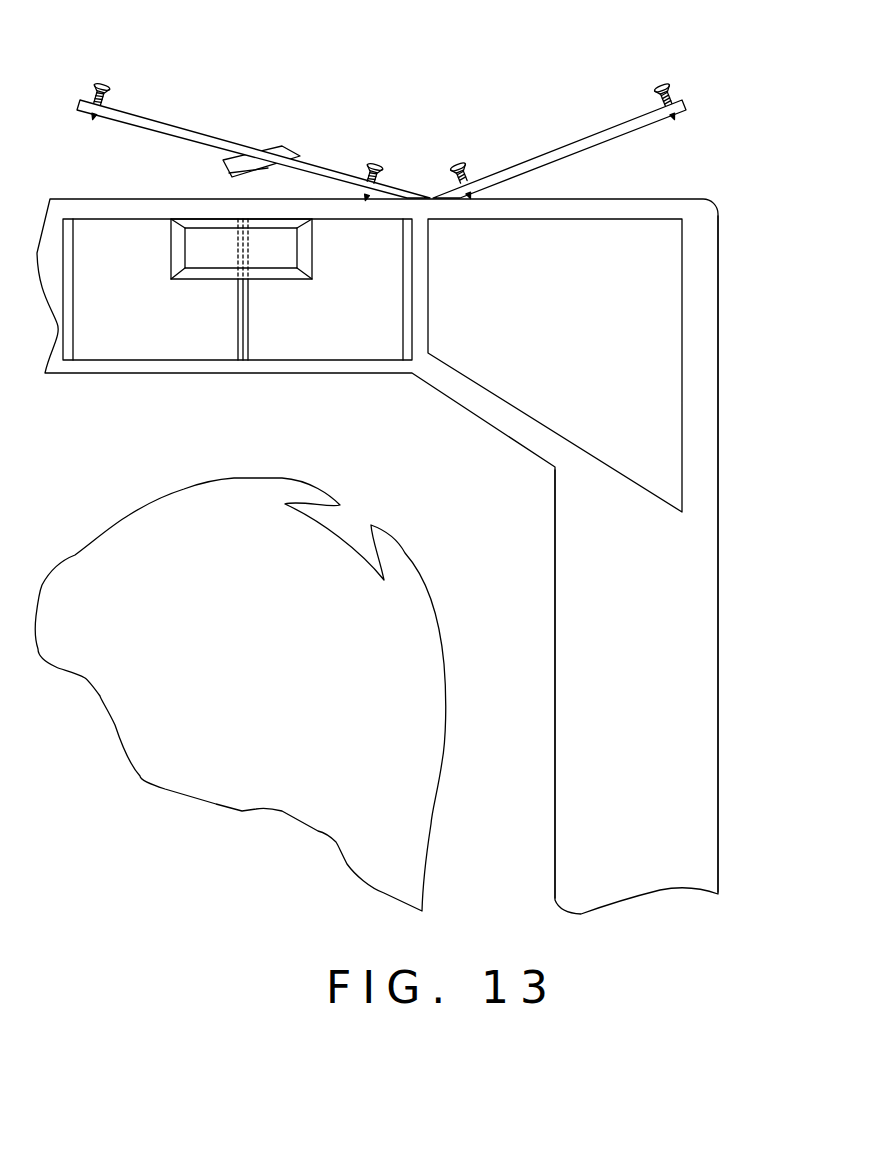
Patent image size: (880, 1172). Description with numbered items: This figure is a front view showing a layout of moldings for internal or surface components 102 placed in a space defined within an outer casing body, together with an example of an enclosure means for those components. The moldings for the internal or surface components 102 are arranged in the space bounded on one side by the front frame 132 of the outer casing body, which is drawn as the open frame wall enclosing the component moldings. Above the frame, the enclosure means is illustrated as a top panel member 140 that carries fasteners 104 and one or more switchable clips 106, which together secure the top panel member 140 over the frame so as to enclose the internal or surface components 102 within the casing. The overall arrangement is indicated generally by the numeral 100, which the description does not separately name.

The frame assembly 100 is at (683, 180).
The internal or surface components 102 is at (362, 302).
The fasteners 104 is at (658, 80).
The switchable clips 106 is at (285, 144).
The front frame 132 is at (664, 587).
The top panel member 140 is at (593, 130).